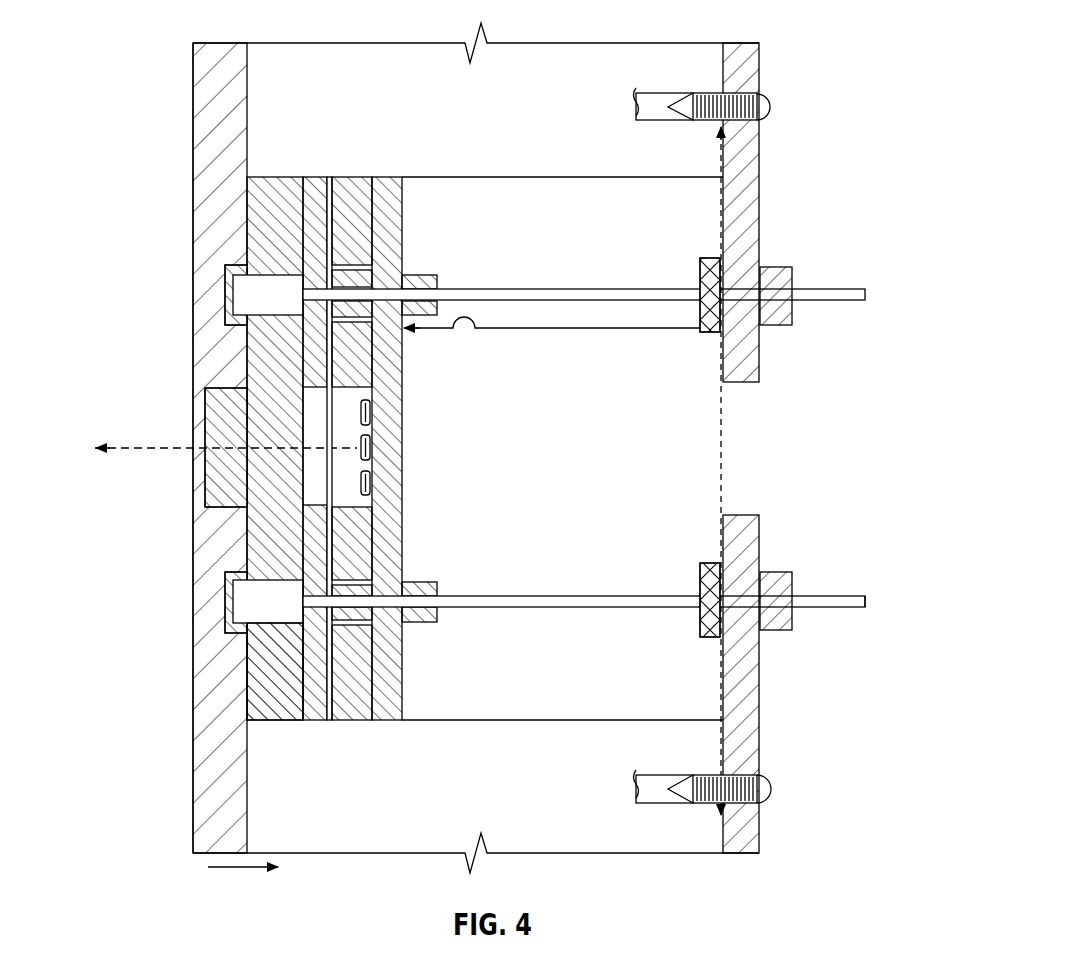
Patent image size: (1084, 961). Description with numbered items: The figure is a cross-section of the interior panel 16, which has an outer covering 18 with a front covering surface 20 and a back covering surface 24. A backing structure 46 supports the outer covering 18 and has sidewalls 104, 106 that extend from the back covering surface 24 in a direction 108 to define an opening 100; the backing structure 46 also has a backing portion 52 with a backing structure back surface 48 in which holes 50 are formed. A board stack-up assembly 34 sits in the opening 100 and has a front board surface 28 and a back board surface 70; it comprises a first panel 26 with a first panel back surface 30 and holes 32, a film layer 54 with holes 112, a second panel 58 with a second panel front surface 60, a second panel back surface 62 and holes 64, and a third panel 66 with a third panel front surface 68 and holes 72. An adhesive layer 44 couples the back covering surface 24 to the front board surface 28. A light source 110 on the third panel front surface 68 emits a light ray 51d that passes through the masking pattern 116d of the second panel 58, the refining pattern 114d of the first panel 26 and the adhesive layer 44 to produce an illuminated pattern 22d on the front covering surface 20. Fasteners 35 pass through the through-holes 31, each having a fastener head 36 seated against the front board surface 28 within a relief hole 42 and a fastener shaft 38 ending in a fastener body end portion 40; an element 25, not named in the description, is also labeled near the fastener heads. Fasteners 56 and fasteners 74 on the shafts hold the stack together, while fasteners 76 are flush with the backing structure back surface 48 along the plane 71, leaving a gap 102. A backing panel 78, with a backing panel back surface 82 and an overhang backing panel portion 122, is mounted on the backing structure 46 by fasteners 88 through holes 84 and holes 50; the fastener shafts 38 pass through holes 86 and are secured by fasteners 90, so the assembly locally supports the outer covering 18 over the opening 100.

The interior panel 16 is at (160, 121).
The outer covering 18 is at (205, 185).
The front covering surface 20 is at (193, 178).
The illuminated pattern 22d is at (168, 438).
The back covering surface 24 is at (245, 680).
The fastener head 25 is at (238, 295).
The first panel 26 is at (234, 284).
The front board surface 28 is at (293, 203).
The first panel back surface 30 is at (322, 205).
The through-hole 31 is at (400, 277).
The hole 32 is at (353, 263).
The board stack-up assembly 34 is at (413, 672).
The fastener 35 is at (585, 288).
The fastener head 36 is at (263, 612).
The fastener shaft 38 is at (570, 608).
The fastener body end portion 40 is at (870, 598).
The relief hole 42 is at (224, 256).
The adhesive layer 44 is at (245, 652).
The backing structure 46 is at (535, 152).
The backing structure back surface 48 is at (723, 82).
The hole 50 is at (680, 122).
The light ray 51d is at (122, 455).
The backing portion 52 is at (640, 175).
The film layer 54 is at (332, 710).
The fastener 56 is at (393, 707).
The second panel 58 is at (352, 195).
The second panel front surface 60 is at (320, 700).
The second panel back surface 62 is at (373, 413).
The hole 64 is at (397, 277).
The third panel 66 is at (393, 368).
The third panel front surface 68 is at (330, 520).
The back board surface 70 is at (403, 480).
The plane 71 is at (720, 745).
The hole 72 is at (397, 576).
The fastener 74 is at (428, 578).
The fastener 76 is at (710, 335).
The backing panel 78 is at (760, 200).
The backing panel back surface 82 is at (762, 638).
The hole 84 is at (762, 96).
The hole 86 is at (760, 262).
The fastener 88 is at (773, 107).
The fastener 90 is at (793, 618).
The opening 100 is at (740, 178).
The gap 102 is at (563, 332).
The sidewall 104 is at (565, 72).
The sidewall 106 is at (348, 832).
The direction 108 is at (240, 870).
The light source 110 is at (226, 405).
The hole 112 is at (248, 718).
The refining pattern 114d is at (296, 440).
The masking pattern 116d is at (350, 384).
The overhang backing panel portion 122 is at (737, 222).